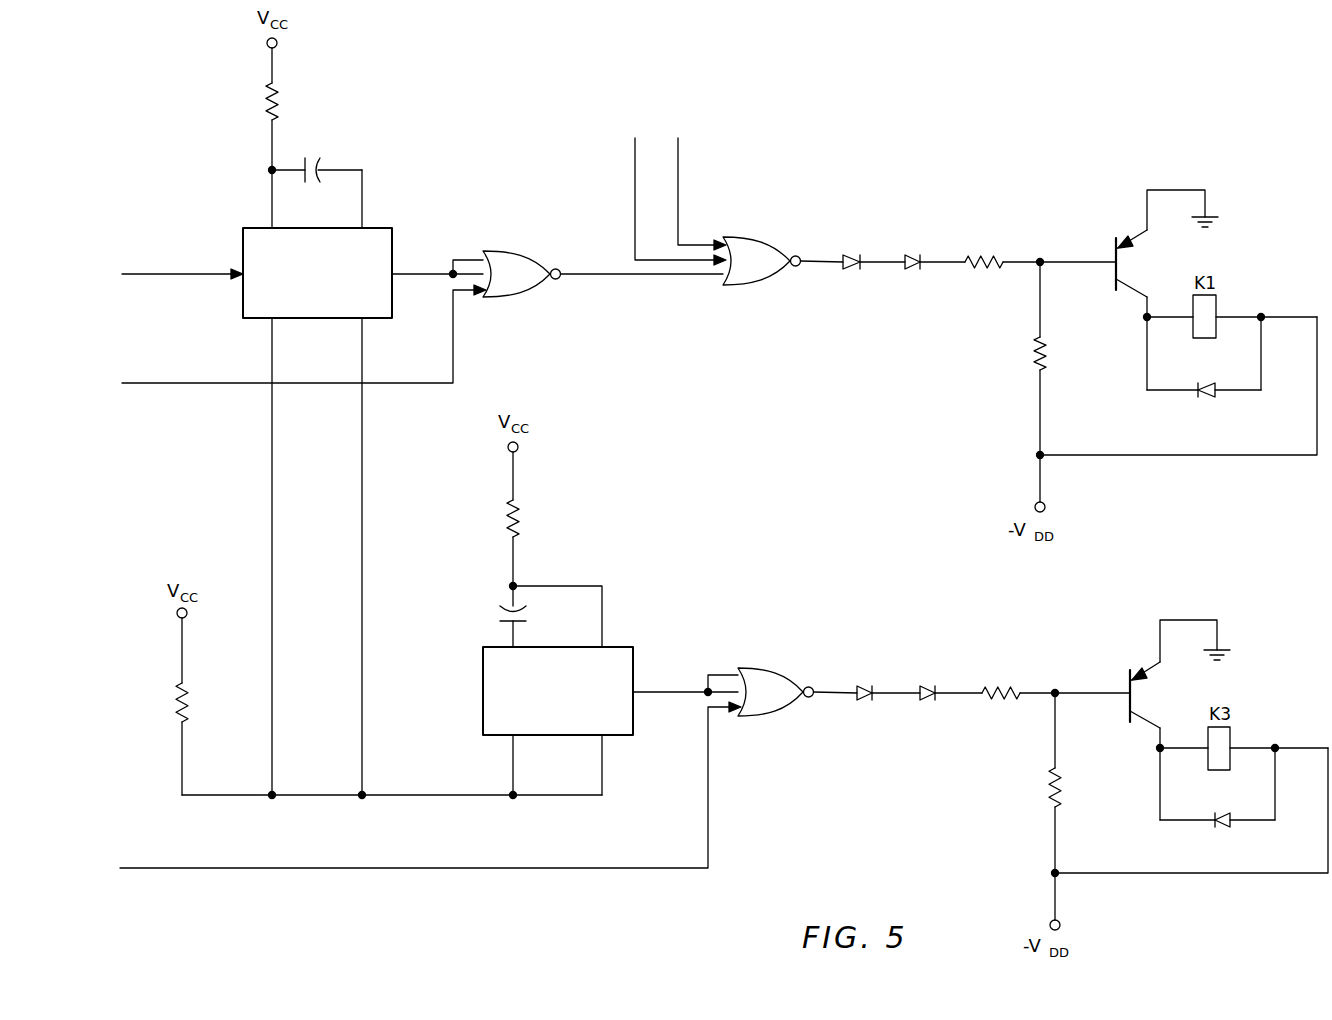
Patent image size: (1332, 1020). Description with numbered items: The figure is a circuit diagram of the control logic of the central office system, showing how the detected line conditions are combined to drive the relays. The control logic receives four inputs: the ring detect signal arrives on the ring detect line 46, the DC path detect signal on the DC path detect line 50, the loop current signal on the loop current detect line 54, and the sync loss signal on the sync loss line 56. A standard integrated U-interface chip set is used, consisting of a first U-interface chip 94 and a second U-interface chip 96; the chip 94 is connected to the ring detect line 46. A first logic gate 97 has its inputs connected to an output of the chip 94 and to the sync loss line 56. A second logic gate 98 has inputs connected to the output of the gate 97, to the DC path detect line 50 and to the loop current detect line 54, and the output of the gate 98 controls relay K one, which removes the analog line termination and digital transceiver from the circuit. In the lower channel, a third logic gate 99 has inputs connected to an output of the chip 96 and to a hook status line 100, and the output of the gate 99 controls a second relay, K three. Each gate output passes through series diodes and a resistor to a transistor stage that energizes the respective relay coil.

The ring detect line 46 is at (170, 274).
The DC path detect line 50 is at (635, 165).
The loop current detect line 54 is at (680, 165).
The sync loss line 56 is at (175, 383).
The U-interface chip 94 is at (385, 228).
The U-interface chip 96 is at (485, 647).
The logic gate 97 is at (520, 251).
The logic gate 98 is at (760, 237).
The logic gate 99 is at (775, 668).
The hook status line 100 is at (185, 868).